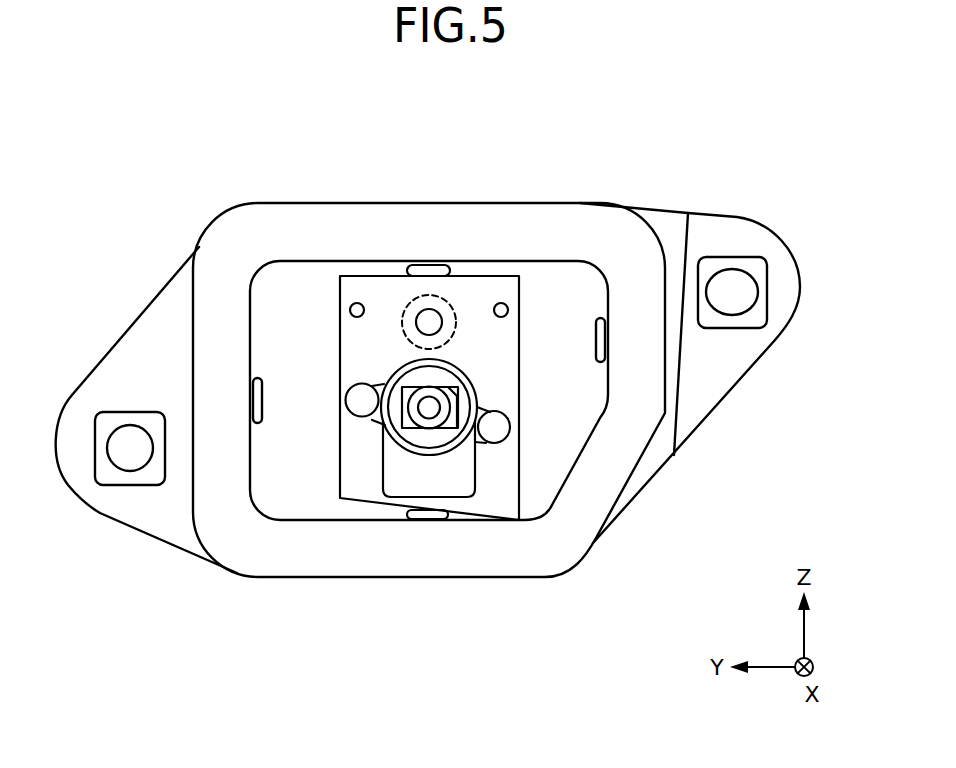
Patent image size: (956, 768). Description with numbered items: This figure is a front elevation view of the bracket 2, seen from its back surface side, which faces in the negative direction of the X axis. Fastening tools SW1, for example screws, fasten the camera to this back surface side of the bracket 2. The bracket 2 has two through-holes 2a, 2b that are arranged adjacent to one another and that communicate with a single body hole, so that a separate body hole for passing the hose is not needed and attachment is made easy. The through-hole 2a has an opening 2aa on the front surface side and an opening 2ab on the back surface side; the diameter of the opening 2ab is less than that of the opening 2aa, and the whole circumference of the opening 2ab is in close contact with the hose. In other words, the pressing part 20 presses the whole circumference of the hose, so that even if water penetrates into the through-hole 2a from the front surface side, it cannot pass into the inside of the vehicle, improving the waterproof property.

The bracket 2 is at (503, 203).
The through-hole 2a is at (415, 223).
The opening 2aa is at (403, 306).
The opening 2ab is at (429, 308).
The through-hole 2b is at (460, 466).
The pressing part 20 is at (448, 310).
The fastening tool SW1 is at (353, 402).